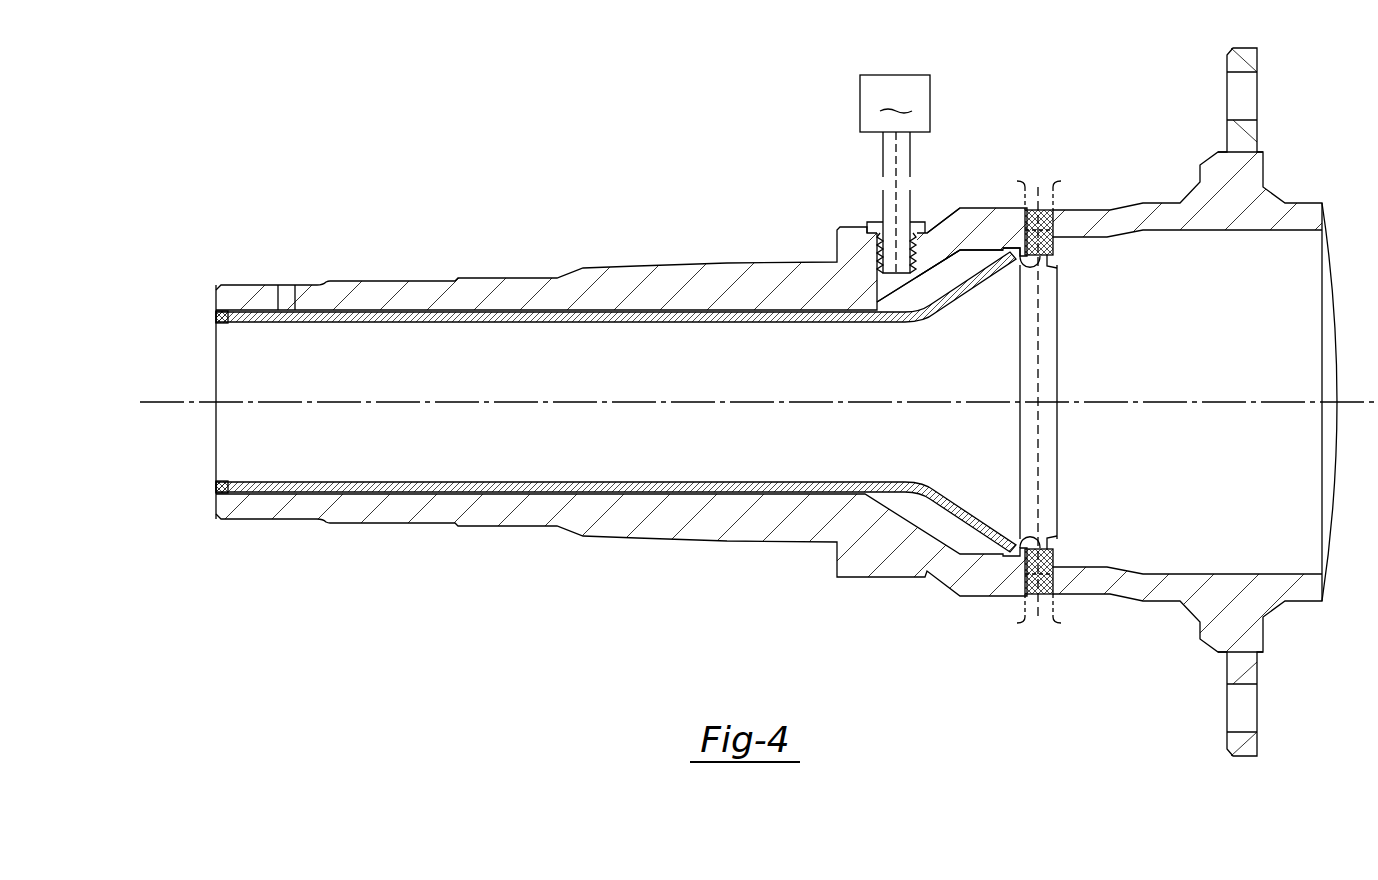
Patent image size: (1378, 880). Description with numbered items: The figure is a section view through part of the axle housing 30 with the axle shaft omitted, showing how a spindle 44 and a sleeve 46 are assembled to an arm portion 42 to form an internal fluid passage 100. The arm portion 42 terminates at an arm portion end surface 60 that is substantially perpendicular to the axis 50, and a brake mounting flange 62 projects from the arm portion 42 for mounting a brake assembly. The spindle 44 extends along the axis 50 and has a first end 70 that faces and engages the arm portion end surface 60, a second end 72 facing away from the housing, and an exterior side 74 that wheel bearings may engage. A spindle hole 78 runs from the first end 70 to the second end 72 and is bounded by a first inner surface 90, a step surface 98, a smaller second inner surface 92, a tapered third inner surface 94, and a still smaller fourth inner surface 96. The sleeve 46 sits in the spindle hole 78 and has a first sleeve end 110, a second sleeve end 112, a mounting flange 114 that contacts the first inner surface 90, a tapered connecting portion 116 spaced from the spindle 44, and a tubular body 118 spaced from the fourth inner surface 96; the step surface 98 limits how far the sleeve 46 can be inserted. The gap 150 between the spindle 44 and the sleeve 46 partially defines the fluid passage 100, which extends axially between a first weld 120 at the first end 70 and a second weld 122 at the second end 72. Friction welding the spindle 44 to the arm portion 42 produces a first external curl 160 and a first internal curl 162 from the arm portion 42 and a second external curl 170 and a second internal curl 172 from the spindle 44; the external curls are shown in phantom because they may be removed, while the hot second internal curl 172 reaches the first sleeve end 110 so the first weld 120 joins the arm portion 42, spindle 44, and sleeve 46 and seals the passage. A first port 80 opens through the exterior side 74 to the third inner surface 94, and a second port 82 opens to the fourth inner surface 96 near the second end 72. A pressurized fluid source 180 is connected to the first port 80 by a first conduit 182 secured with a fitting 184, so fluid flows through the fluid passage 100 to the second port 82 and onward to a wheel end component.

The axle housing 30 is at (1106, 401).
The arm portion 42 is at (1106, 401).
The spindle 44 is at (744, 331).
The sleeve 46 is at (744, 337).
The axis 50 is at (147, 405).
The arm portion end surface 60 is at (1020, 383).
The brake mounting flange 62 is at (1247, 47).
The first end 70 is at (1106, 401).
The second end 72 is at (744, 331).
The exterior side 74 is at (744, 331).
The spindle hole 78 is at (956, 266).
The first port 80 is at (883, 280).
The second port 82 is at (286, 285).
The first inner surface 90 is at (1025, 262).
The second inner surface 92 is at (977, 257).
The third inner surface 94 is at (930, 278).
The fourth inner surface 96 is at (584, 410).
The step surface 98 is at (1013, 257).
The fluid passage 100 is at (744, 337).
The first sleeve end 110 is at (1054, 557).
The second sleeve end 112 is at (216, 489).
The mounting flange 114 is at (1027, 557).
The connecting portion 116 is at (584, 402).
The tubular body 118 is at (584, 438).
The first weld 120 is at (1050, 595).
The second weld 122 is at (216, 315).
The gap 150 is at (744, 337).
The first external curl 160 is at (1050, 189).
The first internal curl 162 is at (1053, 549).
The second external curl 170 is at (1036, 383).
The second internal curl 172 is at (1039, 553).
The pressurized fluid source 180 is at (895, 103).
The first conduit 182 is at (882, 180).
The fitting 184 is at (868, 224).